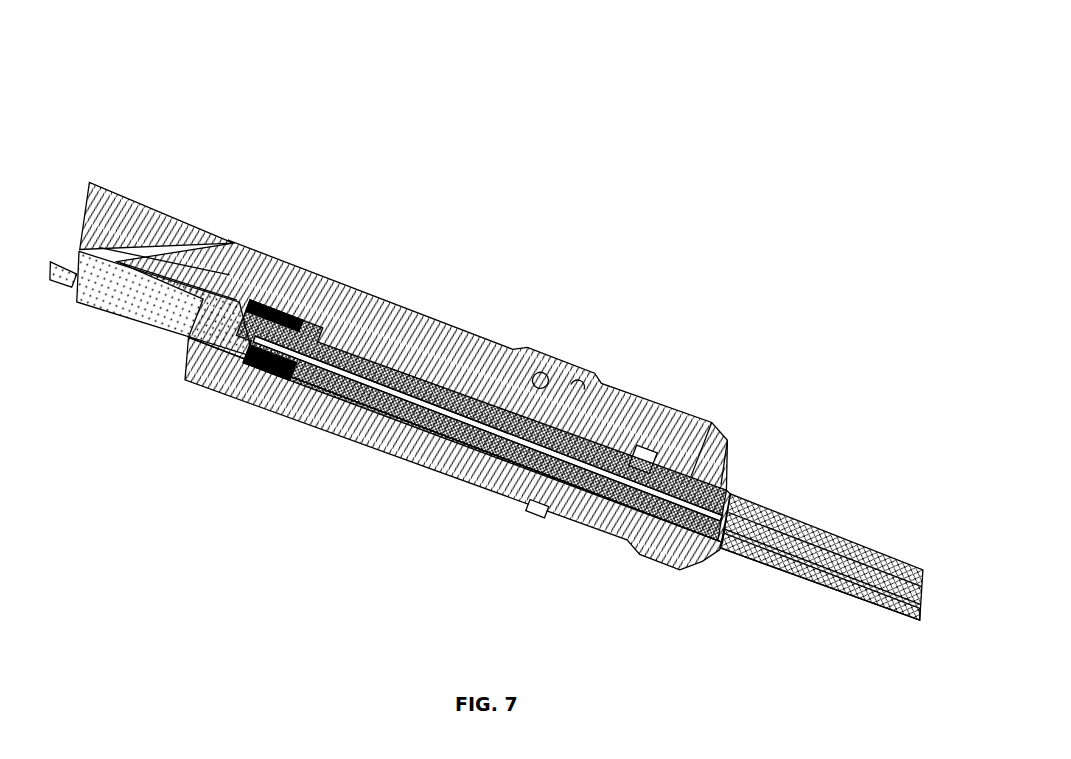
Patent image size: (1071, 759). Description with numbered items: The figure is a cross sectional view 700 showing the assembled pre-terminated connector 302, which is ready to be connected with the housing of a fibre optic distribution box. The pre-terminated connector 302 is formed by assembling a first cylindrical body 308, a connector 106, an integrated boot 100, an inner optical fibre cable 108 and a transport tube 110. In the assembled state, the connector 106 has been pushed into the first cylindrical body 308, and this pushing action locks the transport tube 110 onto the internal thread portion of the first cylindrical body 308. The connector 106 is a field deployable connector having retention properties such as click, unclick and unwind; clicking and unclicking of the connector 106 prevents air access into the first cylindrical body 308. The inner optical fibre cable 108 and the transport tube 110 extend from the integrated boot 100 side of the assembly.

The cross sectional view 700 is at (480, 327).
The pre-terminated connector 302 is at (536, 257).
The first cylindrical body 308 is at (165, 232).
The connector 106 is at (147, 303).
The integrated boot 100 is at (335, 418).
The transport tube 110 is at (813, 533).
The inner optical fibre cable 108 is at (770, 567).